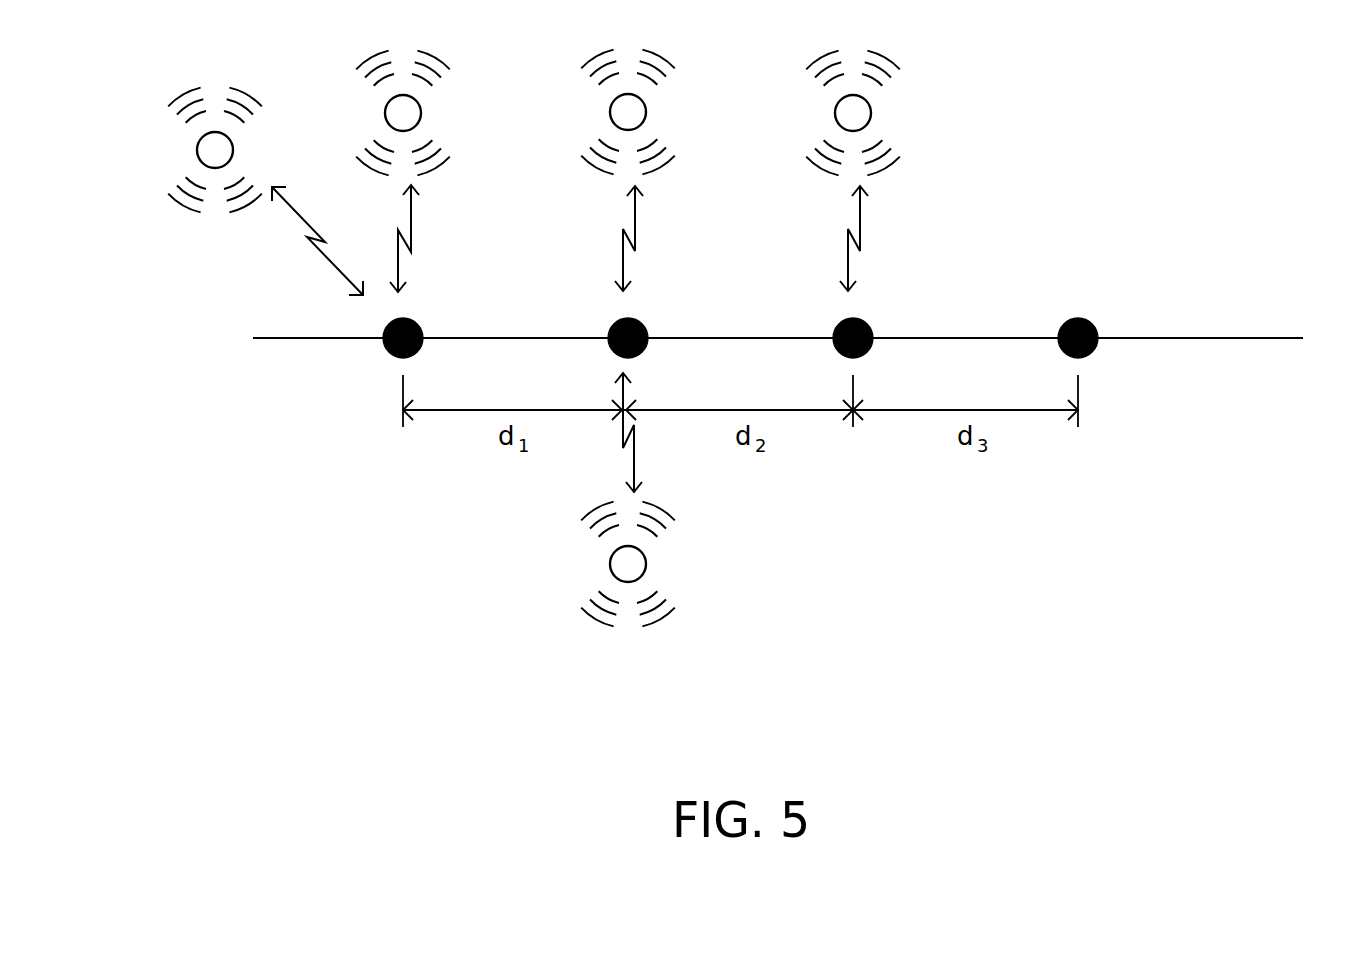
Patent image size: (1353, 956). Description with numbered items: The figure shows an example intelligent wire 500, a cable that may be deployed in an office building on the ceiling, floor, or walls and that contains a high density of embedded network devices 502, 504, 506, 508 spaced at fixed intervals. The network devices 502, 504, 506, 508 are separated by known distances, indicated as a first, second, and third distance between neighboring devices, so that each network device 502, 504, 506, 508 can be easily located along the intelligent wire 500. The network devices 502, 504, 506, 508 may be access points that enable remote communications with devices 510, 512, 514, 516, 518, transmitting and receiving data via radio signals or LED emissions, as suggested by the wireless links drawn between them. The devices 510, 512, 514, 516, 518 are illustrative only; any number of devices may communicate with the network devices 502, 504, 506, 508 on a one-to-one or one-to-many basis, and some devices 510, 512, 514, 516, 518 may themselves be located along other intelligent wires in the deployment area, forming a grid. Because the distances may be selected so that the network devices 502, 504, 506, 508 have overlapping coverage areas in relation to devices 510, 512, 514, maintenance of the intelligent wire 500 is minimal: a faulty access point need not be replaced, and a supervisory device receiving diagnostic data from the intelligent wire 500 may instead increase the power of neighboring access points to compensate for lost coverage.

The intelligent wire 500 is at (287, 333).
The network device 502 is at (428, 323).
The network device 504 is at (652, 323).
The network device 506 is at (877, 323).
The network device 508 is at (1102, 323).
The device 510 is at (425, 112).
The device 512 is at (650, 112).
The device 514 is at (875, 112).
The device 516 is at (195, 150).
The device 518 is at (648, 565).